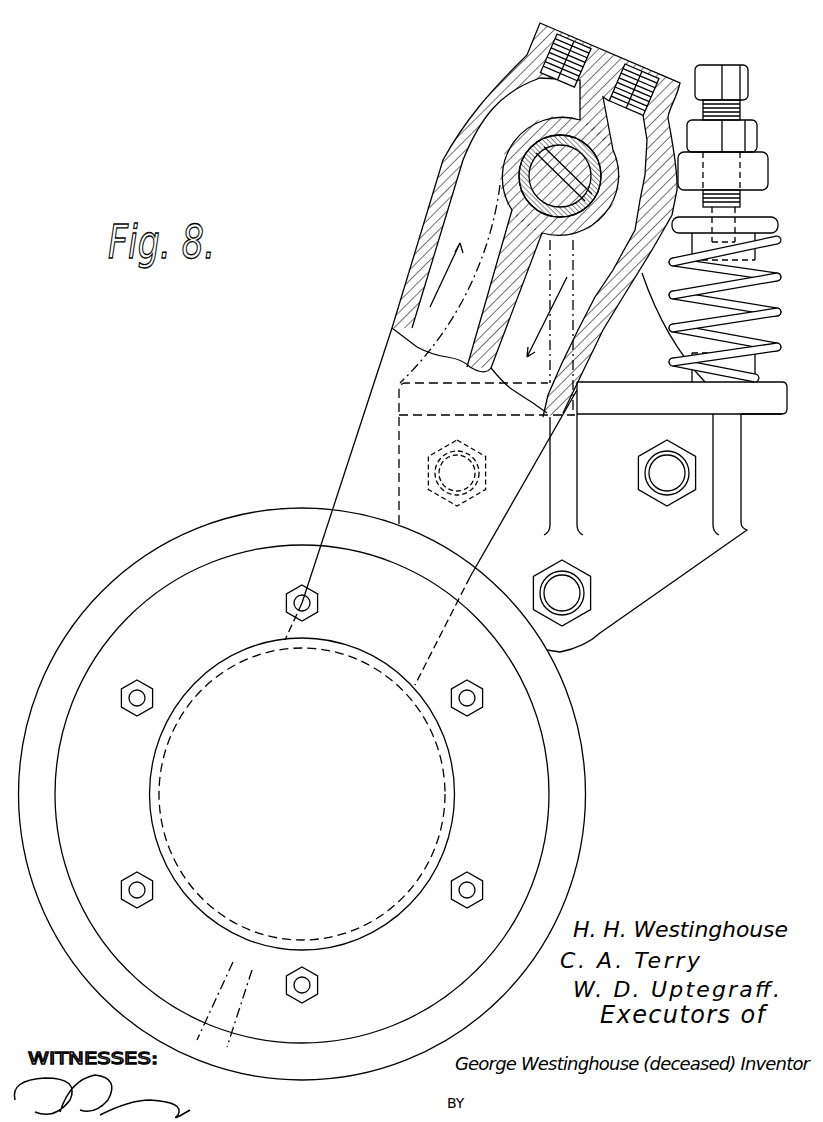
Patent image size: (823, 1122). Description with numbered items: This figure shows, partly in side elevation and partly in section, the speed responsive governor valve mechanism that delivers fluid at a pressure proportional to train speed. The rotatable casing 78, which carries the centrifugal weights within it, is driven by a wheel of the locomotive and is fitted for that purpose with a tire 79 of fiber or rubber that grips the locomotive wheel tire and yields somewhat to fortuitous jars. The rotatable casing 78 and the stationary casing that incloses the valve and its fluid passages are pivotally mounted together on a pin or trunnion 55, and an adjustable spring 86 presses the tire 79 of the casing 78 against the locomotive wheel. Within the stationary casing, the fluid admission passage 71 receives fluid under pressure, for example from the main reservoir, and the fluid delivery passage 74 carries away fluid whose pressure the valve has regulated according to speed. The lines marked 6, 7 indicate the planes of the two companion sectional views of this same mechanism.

The brake shoe 6 is at (575, 36).
The brake shoe 7 is at (623, 117).
The pivot pin 55 is at (560, 176).
The fluid admission passage 71 is at (587, 290).
The fluid delivery passage 74 is at (470, 172).
The rotatable casing 78 is at (301, 794).
The tire 79 is at (172, 538).
The adjustable spring 86 is at (770, 243).